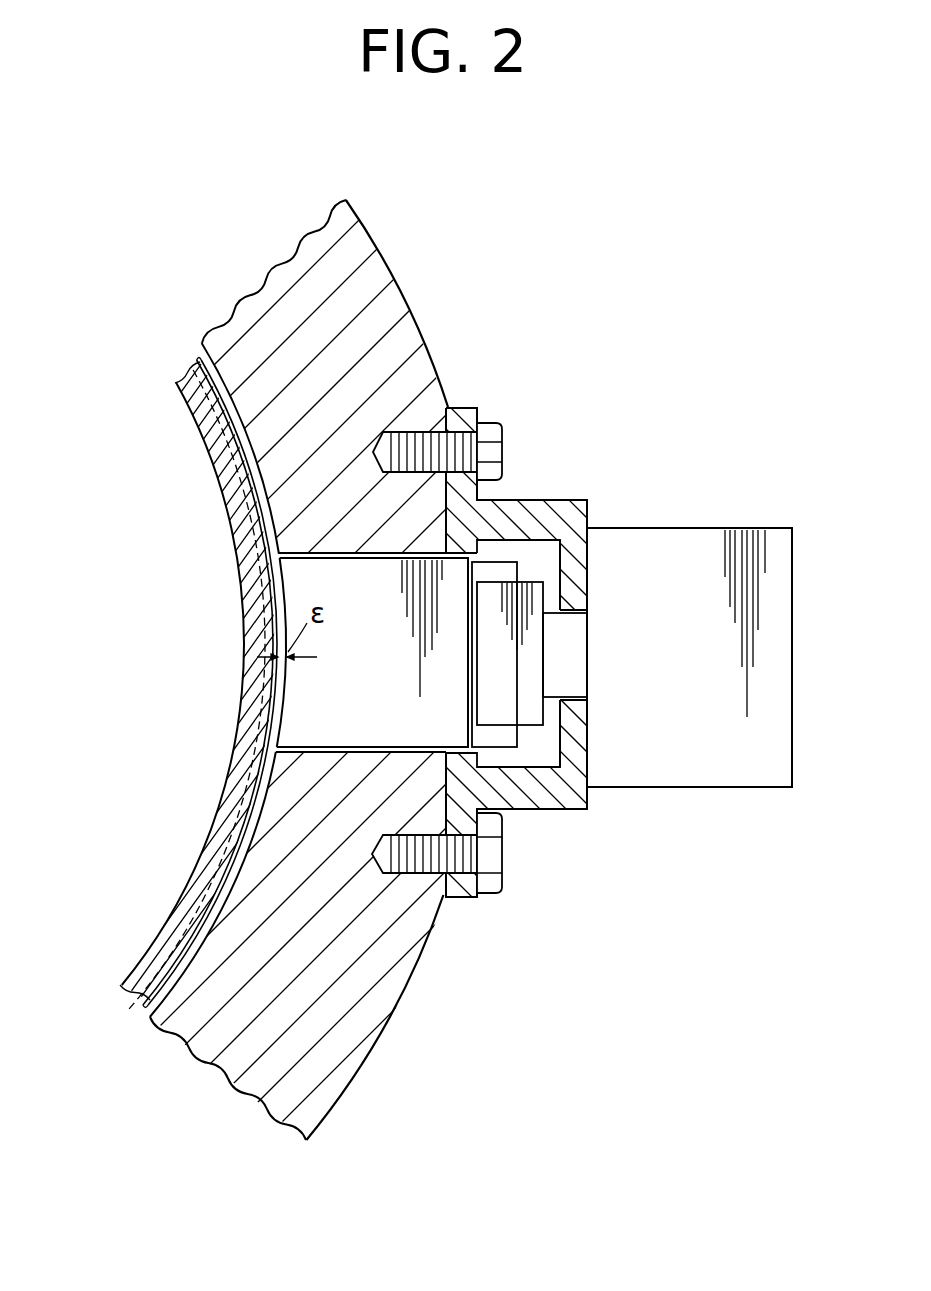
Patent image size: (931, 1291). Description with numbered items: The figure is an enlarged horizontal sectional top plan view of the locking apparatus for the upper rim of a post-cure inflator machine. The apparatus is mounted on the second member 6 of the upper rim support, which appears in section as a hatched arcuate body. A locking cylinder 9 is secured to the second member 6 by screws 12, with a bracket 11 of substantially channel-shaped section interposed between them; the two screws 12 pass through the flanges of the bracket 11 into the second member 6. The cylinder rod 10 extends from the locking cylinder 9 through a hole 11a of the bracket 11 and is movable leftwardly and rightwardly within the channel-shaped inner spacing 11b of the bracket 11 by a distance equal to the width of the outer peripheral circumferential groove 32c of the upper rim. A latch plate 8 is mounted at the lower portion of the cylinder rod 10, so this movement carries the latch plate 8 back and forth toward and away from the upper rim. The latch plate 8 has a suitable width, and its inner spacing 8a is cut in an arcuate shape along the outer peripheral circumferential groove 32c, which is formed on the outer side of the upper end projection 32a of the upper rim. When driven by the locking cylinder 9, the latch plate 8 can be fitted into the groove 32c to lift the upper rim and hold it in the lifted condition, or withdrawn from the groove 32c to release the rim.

The second member of the upper rim support 6 is at (398, 303).
The latch plate 8 is at (391, 689).
The inner spacing of the latch plate 8a is at (268, 614).
The locking cylinder 9 is at (738, 540).
The cylinder rod 10 is at (573, 653).
The bracket 11 is at (568, 508).
The hole of the bracket 11a is at (583, 597).
The channel-shaped inner spacing of the bracket 11b is at (533, 556).
The screws 12 is at (489, 425).
The upper end projection of the upper rim 32a is at (223, 836).
The outer peripheral circumferential groove of the upper rim 32c is at (130, 1006).